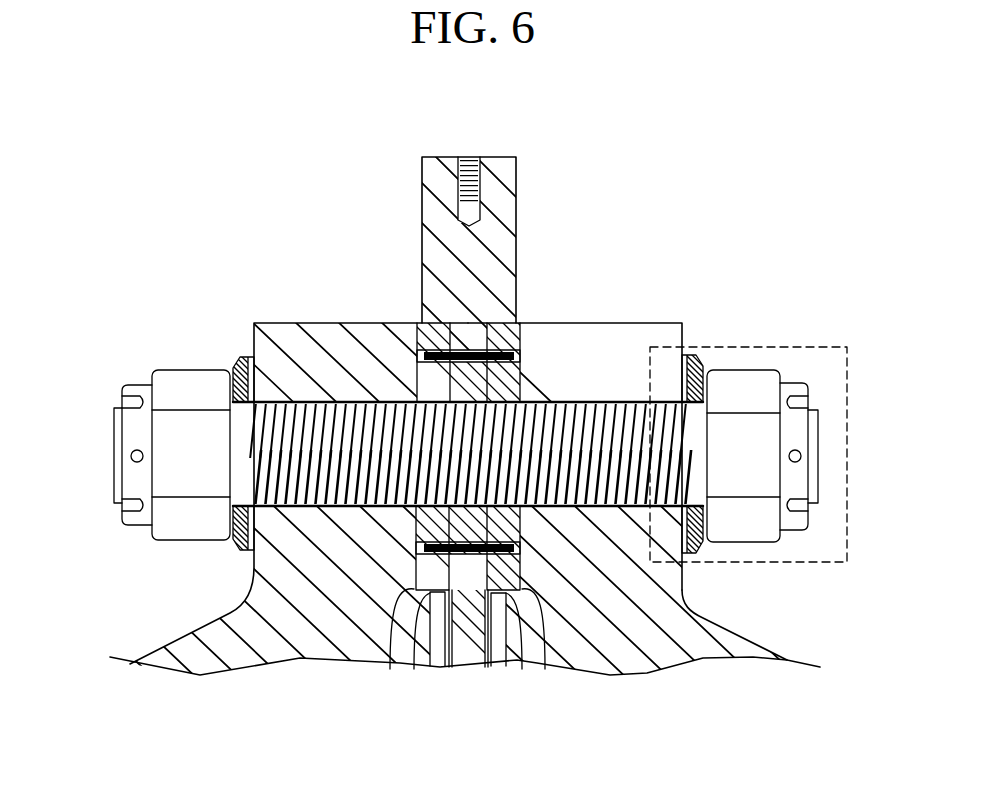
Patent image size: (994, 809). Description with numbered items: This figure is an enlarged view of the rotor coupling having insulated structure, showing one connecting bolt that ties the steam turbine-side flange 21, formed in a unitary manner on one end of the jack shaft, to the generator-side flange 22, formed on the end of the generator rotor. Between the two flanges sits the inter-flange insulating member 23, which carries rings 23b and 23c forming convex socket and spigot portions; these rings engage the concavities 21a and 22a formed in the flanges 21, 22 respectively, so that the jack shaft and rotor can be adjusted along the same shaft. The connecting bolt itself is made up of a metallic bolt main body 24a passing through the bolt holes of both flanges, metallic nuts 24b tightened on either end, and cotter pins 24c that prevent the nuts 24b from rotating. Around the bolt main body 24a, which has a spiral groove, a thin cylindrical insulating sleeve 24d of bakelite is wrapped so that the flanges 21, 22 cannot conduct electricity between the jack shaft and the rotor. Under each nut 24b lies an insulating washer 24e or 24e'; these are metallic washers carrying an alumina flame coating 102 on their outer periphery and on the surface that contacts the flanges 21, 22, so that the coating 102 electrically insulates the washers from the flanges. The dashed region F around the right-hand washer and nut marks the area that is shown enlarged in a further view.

The steam turbine-side flange 21 is at (364, 335).
The concavity 21a is at (436, 622).
The generator-side flange 22 is at (637, 330).
The concavity 22a is at (500, 622).
The inter-flange insulating member 23 is at (517, 187).
The ring 23b is at (410, 608).
The ring 23c is at (524, 608).
The bolt main body 24a is at (297, 412).
The nut 24b is at (188, 388).
The cotter pin 24c is at (131, 456).
The insulating sleeve 24d is at (592, 398).
The insulating washer 24e is at (242, 412).
The insulating washer 24e' is at (694, 409).
The alumina flame coating 102 is at (684, 556).
The section F is at (856, 372).